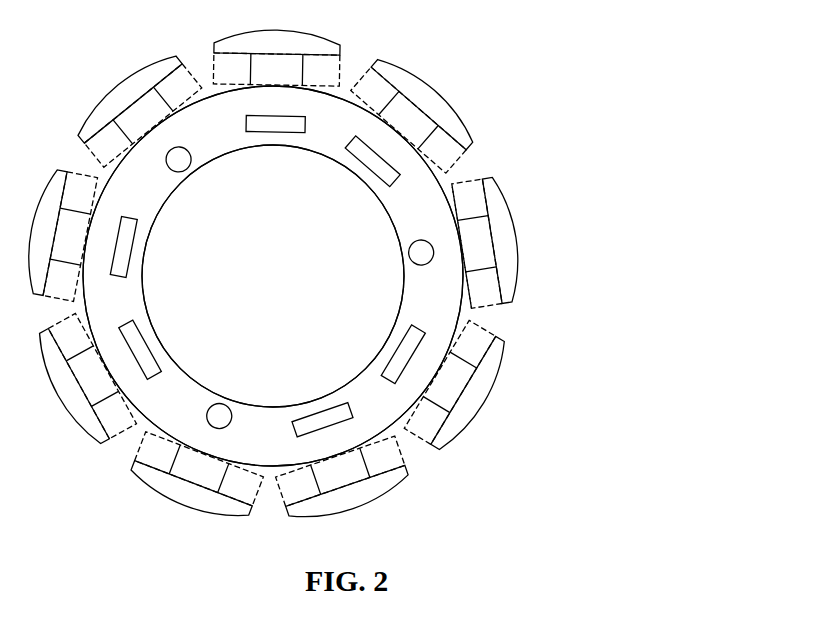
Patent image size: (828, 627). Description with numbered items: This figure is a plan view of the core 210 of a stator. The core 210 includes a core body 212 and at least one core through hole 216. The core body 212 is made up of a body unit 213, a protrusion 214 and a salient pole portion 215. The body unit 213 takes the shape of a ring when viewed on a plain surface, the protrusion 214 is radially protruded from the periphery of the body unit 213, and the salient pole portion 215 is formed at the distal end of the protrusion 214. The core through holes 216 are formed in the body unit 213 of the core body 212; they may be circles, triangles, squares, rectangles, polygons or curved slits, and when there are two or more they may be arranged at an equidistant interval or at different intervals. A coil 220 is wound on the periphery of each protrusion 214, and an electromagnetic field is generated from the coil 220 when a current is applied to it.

The core 210 is at (550, 237).
The core body 212 is at (538, 198).
The body unit 213 is at (427, 203).
The protrusion 214 is at (478, 203).
The salient pole portion 215 is at (507, 221).
The core through hole 216 is at (412, 358).
The coil 220 is at (493, 303).